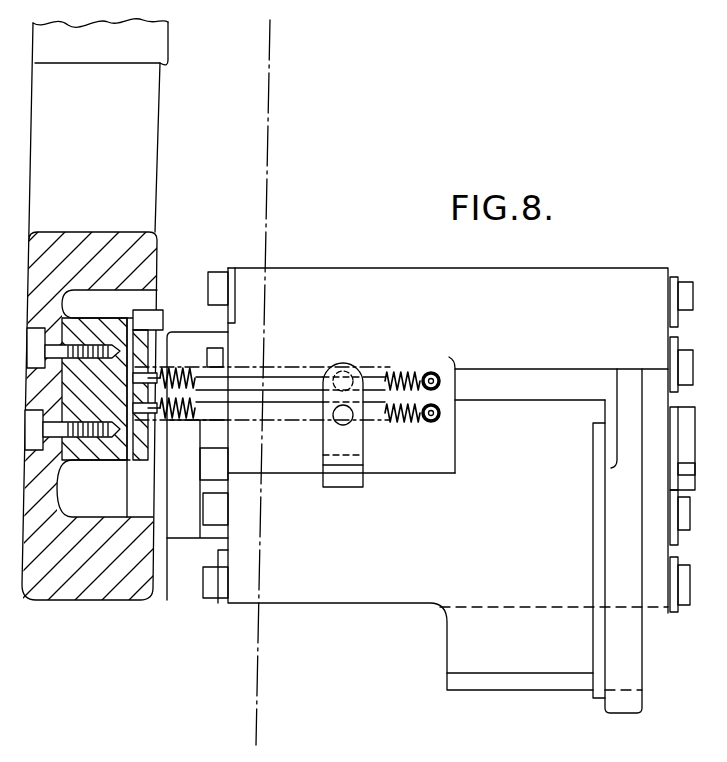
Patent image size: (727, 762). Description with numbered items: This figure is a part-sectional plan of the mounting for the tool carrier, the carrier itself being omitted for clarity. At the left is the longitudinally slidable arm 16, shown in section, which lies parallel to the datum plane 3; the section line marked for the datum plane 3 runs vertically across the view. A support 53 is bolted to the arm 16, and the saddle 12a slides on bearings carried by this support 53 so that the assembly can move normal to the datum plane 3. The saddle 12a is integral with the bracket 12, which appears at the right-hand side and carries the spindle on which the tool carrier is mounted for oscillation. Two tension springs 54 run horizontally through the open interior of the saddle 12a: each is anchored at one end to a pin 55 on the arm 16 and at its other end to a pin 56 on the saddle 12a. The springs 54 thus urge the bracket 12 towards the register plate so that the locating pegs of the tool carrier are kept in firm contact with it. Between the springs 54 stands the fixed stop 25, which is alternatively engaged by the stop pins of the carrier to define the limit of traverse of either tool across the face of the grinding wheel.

The datum plane 3 is at (268, 712).
The bracket 12 is at (660, 615).
The saddle 12a is at (357, 595).
The arm 16 is at (150, 152).
The fixed stop 25 is at (341, 488).
The support 53 is at (193, 532).
The tension springs 54 is at (290, 398).
The pins 55 is at (150, 327).
The pins 56 is at (430, 422).